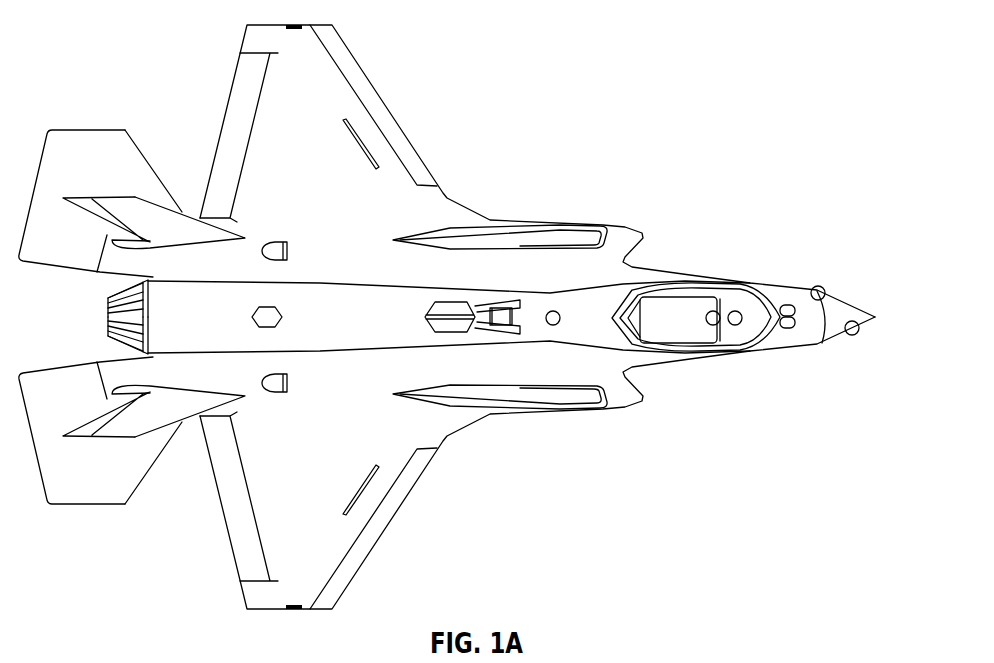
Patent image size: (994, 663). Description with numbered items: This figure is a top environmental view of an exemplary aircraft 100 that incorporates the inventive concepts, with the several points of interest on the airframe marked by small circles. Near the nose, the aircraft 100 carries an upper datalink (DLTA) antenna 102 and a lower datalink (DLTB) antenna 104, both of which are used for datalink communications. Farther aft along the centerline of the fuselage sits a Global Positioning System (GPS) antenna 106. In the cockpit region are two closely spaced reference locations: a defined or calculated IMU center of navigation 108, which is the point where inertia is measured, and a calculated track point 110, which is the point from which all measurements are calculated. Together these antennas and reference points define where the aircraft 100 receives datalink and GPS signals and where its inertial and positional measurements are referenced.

The aircraft 100 is at (173, 80).
The upper datalink antenna 102 is at (825, 289).
The lower datalink antenna 104 is at (859, 331).
The Global Positioning System antenna 106 is at (560, 316).
The IMU center of navigation 108 is at (733, 311).
The calculated track point 110 is at (713, 325).